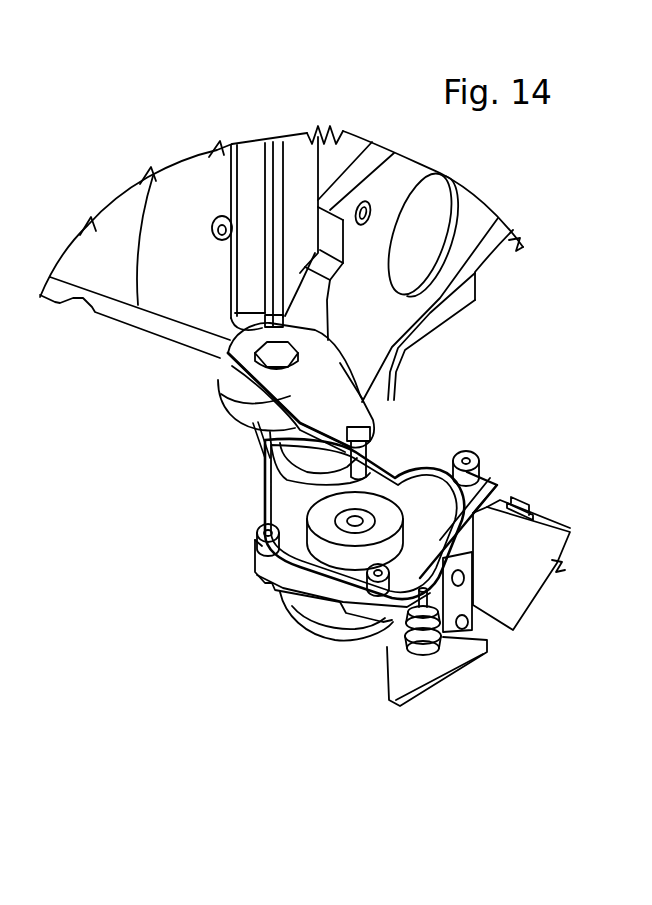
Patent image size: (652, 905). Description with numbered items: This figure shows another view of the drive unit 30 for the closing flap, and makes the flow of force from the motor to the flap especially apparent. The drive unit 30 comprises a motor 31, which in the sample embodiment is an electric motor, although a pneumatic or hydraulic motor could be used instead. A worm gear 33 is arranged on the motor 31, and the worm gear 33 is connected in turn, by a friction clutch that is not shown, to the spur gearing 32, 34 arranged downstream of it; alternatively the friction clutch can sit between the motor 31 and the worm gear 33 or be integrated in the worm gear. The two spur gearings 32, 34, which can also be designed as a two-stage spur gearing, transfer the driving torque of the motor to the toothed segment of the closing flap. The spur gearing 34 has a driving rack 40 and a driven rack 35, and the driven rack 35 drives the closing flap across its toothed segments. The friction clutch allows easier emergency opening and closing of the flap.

The drive unit 30 is at (126, 599).
The motor 31 is at (522, 540).
The spur gearing 32 is at (290, 517).
The worm gear 33 is at (312, 627).
The spur gearing 34 is at (268, 421).
The driven rack 35 is at (228, 398).
The driving rack 40 is at (263, 465).